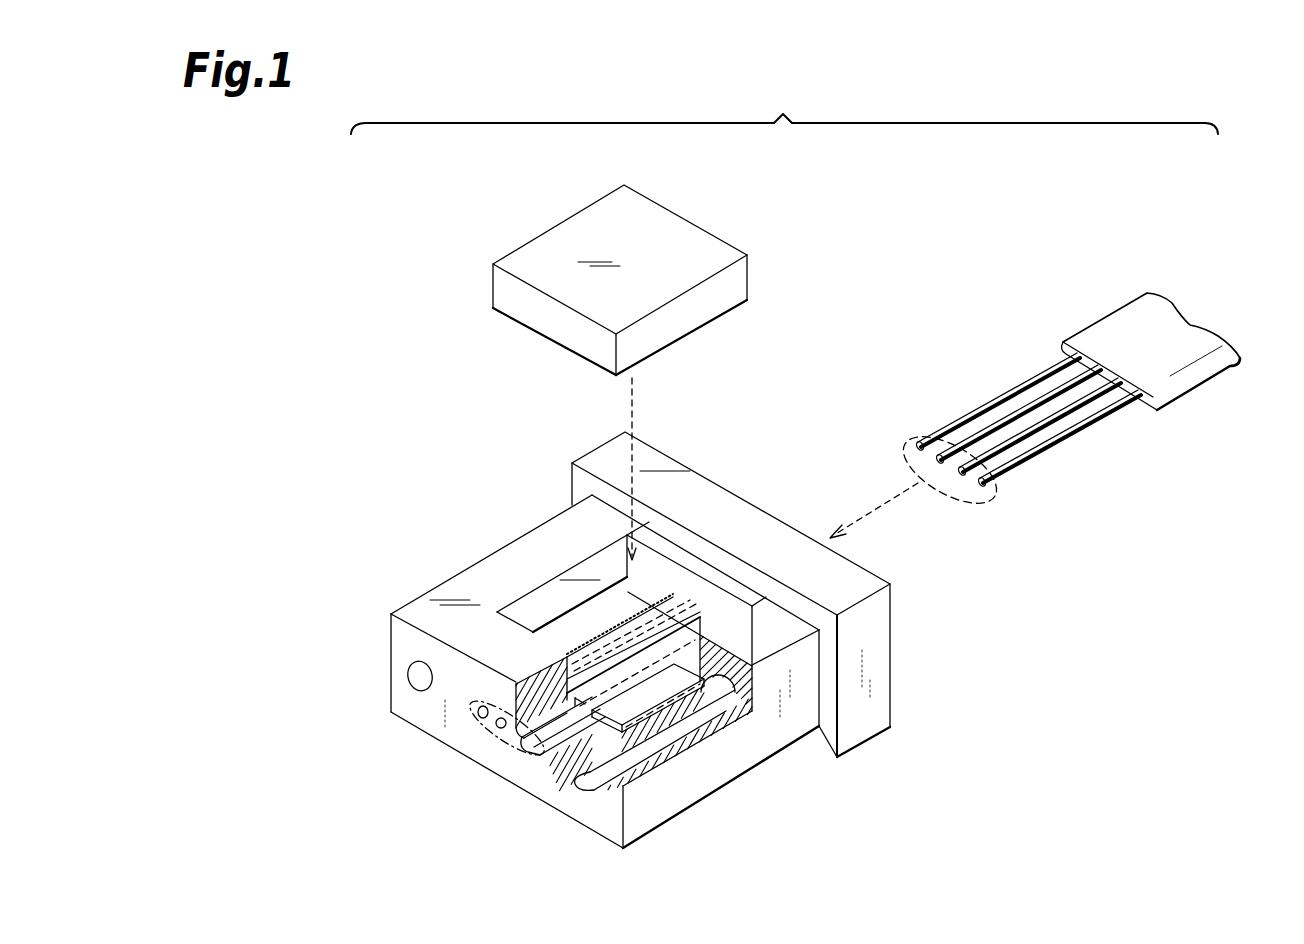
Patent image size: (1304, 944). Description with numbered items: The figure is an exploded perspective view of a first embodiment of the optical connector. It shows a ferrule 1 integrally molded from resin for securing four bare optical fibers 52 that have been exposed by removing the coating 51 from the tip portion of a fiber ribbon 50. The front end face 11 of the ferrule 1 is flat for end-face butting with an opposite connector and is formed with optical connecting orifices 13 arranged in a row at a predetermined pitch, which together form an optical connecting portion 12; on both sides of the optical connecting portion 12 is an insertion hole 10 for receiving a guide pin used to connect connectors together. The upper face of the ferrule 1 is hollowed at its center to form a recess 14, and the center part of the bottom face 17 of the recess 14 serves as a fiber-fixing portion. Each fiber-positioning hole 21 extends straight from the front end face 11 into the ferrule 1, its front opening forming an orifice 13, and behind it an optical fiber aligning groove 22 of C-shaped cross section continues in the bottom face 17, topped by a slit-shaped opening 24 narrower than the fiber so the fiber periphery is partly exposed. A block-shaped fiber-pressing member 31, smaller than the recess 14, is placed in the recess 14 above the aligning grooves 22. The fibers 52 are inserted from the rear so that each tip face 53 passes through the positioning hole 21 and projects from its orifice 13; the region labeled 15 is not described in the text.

The ferrule 1 is at (710, 446).
The insertion hole 10 is at (415, 678).
The front end face 11 is at (405, 723).
The optical connecting portion 12 is at (486, 728).
The optical connecting orifice 13 is at (480, 718).
The recess 14 is at (512, 601).
The recess 15 is at (560, 585).
The bottom face 17 is at (672, 702).
The fiber-positioning hole 21 is at (563, 733).
The optical fiber aligning groove 22 is at (640, 614).
The slit-shaped opening 24 is at (686, 612).
The fiber-pressing member 31 is at (557, 238).
The fiber ribbon 50 is at (1136, 281).
The coating 51 is at (1192, 356).
The optical fiber 52 is at (1097, 417).
The tip face 53 is at (920, 432).